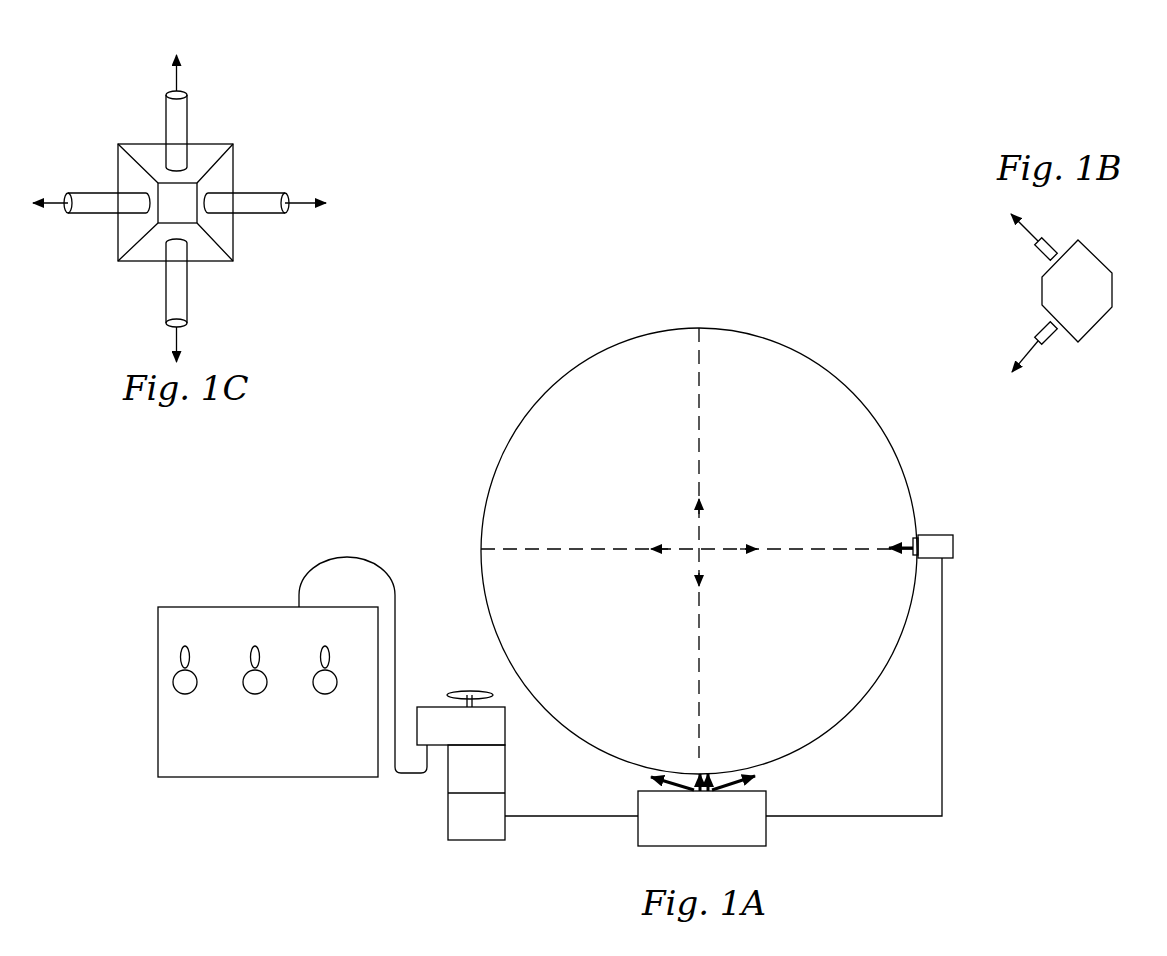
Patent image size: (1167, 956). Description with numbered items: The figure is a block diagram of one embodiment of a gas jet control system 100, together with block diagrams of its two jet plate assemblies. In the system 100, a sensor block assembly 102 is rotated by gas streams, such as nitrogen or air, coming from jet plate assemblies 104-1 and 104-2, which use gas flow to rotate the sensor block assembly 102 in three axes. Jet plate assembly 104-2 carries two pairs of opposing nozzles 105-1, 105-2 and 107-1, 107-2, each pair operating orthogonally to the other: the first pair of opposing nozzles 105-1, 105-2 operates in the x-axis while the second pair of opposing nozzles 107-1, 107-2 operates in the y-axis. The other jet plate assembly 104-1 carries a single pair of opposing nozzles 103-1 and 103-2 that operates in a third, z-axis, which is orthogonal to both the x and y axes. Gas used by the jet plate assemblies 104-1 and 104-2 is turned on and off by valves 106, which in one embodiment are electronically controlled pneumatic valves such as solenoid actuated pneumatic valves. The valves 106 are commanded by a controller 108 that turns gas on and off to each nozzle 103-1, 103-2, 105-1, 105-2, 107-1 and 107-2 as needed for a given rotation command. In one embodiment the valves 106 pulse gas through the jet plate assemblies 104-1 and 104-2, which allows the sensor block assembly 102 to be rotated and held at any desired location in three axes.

In FIG. 1A, the gas jet control system 100 is at (355, 843).
In FIG. 1A, the sensor block assembly 102 is at (772, 338).
In FIG. 1A, the opposing nozzle 103-1 is at (903, 555).
In FIG. 1B, the opposing nozzle 103-1 is at (1038, 251).
In FIG. 1B, the opposing nozzle 103-2 is at (1037, 331).
In FIG. 1A, the jet plate assembly 104-1 is at (948, 533).
In FIG. 1B, the jet plate assembly 104-1 is at (1087, 335).
In FIG. 1A, the jet plate assembly 104-2 is at (766, 833).
In FIG. 1C, the jet plate assembly 104-2 is at (233, 257).
In FIG. 1A, the opposing nozzle 105-1 is at (699, 774).
In FIG. 1C, the opposing nozzle 105-1 is at (190, 302).
In FIG. 1A, the opposing nozzle 105-2 is at (710, 774).
In FIG. 1C, the opposing nozzle 105-2 is at (190, 123).
In FIG. 1A, the valves 106 is at (505, 735).
In FIG. 1A, the opposing nozzle 107-1 is at (760, 778).
In FIG. 1C, the opposing nozzle 107-1 is at (267, 215).
In FIG. 1A, the opposing nozzle 107-2 is at (647, 778).
In FIG. 1C, the opposing nozzle 107-2 is at (85, 215).
In FIG. 1A, the controller 108 is at (197, 606).